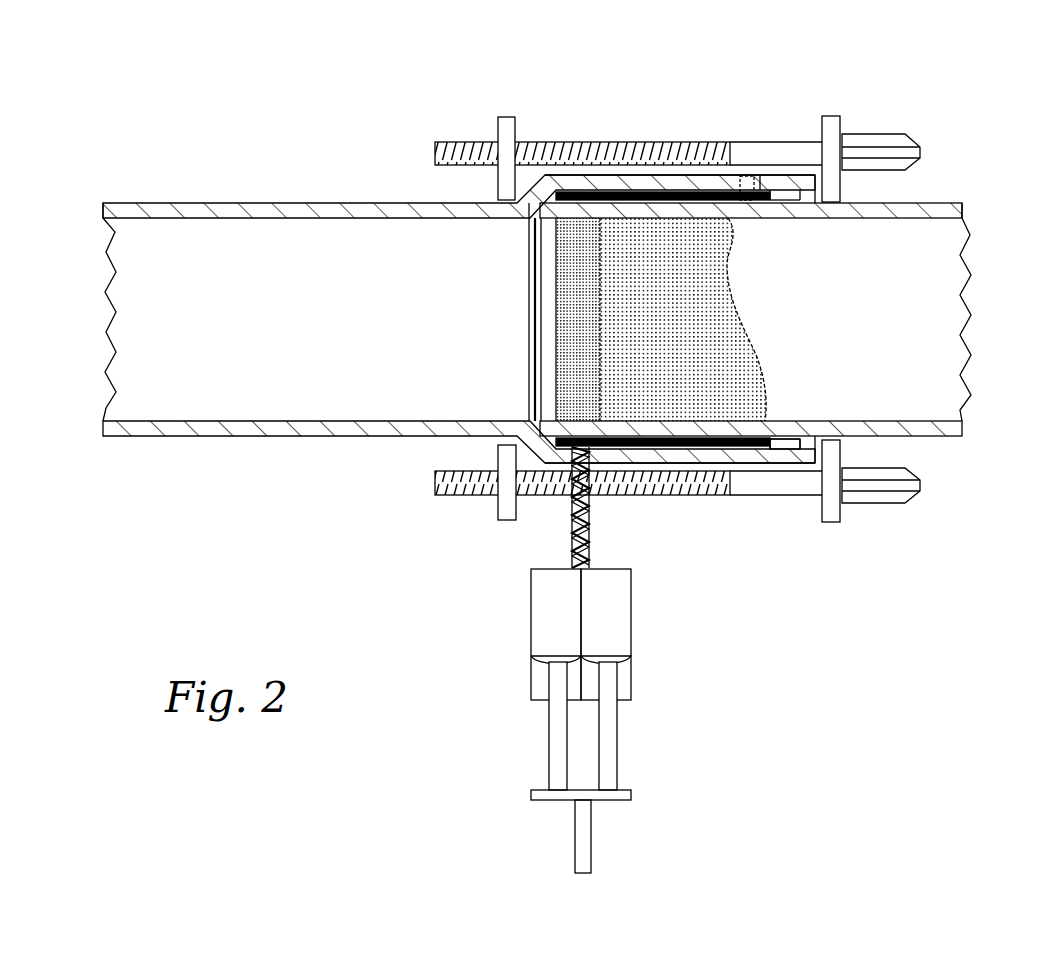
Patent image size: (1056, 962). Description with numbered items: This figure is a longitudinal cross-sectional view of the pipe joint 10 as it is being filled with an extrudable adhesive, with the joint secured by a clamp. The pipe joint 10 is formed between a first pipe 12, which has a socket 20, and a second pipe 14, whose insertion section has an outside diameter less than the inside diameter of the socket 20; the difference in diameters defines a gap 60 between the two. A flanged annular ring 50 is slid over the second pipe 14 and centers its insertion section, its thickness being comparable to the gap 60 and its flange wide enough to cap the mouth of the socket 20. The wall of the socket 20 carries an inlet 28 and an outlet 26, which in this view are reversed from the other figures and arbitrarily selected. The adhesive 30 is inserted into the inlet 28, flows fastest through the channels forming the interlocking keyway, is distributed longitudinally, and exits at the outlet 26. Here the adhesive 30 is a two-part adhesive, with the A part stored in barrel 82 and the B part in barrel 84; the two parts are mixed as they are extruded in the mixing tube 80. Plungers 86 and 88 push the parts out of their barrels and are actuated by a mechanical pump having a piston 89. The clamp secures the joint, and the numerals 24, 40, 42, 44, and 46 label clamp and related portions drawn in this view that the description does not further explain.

The pipe joint 10 is at (345, 176).
The first pipe 12 is at (215, 436).
The second pipe 14 is at (915, 205).
The socket 20 is at (625, 182).
The pipe end gap 24 is at (527, 200).
The outlet 26 is at (760, 185).
The inlet 28 is at (595, 500).
The adhesive 30 is at (762, 450).
The bolt assembly 40 is at (900, 530).
The nut 42 is at (836, 128).
The nut 44 is at (510, 133).
The bolt 46 is at (455, 143).
The flanged annular ring 50 is at (825, 205).
The gap 60 is at (733, 185).
The mixing tube 80 is at (560, 557).
The barrel 82 is at (540, 637).
The barrel 84 is at (620, 594).
The plunger 86 is at (553, 712).
The plunger 88 is at (614, 722).
The piston 89 is at (590, 817).